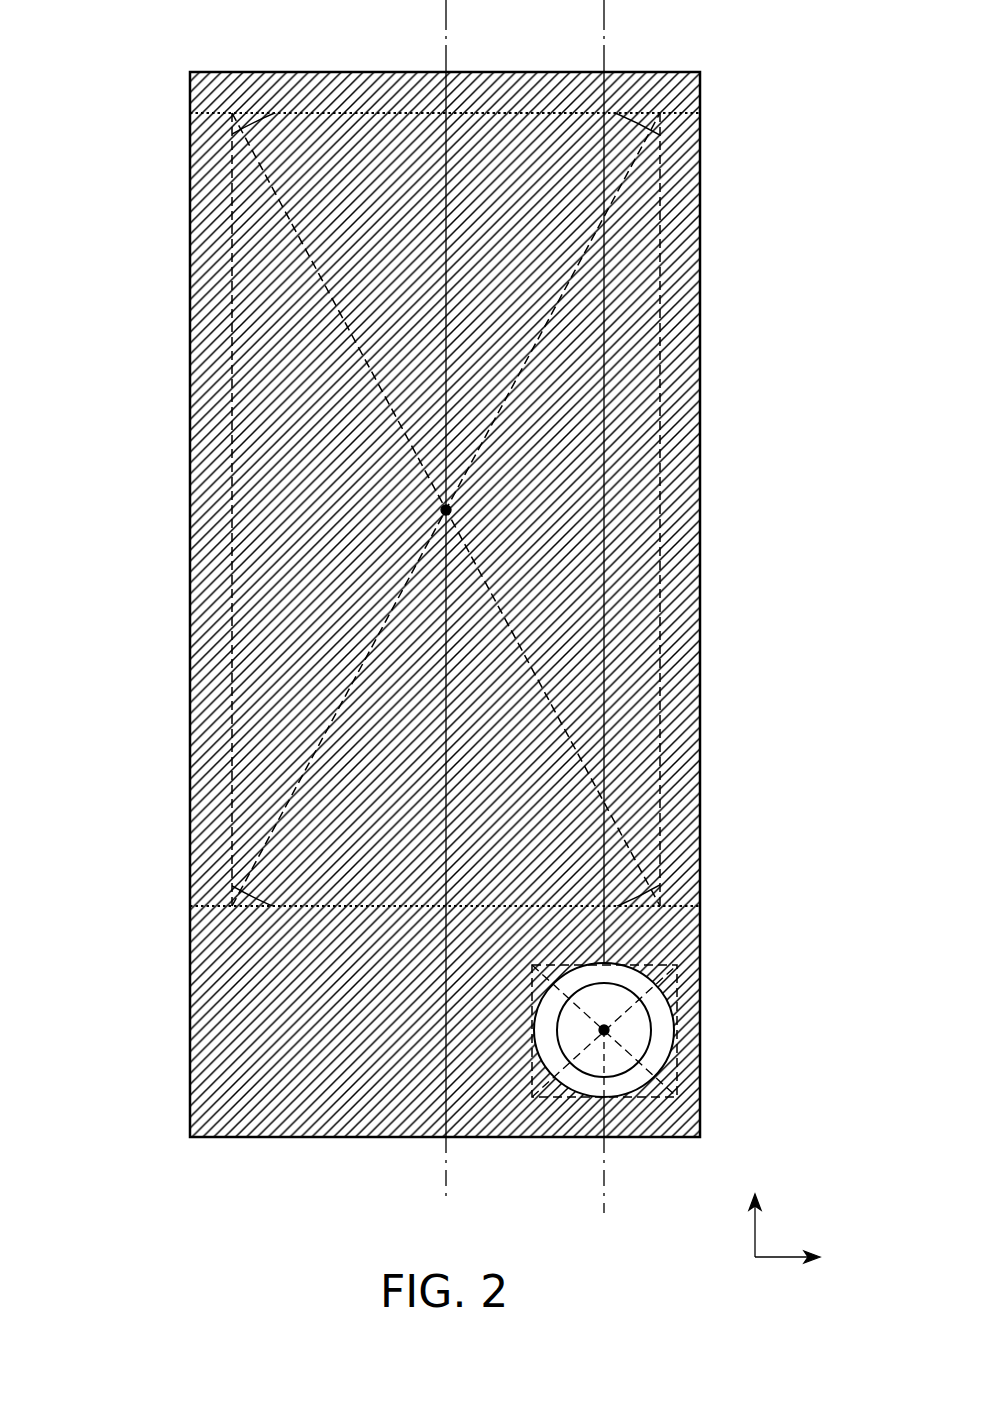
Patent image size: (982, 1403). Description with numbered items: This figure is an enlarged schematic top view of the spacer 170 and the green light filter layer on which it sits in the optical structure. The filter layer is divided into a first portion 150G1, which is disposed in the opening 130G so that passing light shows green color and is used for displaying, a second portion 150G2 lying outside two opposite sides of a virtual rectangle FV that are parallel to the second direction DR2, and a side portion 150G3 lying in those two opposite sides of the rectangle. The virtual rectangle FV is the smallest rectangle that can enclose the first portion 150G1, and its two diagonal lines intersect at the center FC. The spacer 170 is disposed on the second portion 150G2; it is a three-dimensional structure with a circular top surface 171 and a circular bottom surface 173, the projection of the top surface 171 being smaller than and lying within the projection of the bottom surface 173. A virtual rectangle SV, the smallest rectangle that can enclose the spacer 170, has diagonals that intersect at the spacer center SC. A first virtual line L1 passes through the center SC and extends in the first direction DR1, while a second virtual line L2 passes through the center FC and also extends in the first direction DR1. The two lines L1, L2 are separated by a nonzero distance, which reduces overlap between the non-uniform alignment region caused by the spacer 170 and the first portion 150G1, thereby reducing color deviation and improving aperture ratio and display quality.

The opening 130G is at (672, 658).
The side portion 150G3 is at (206, 297).
The second portion 150G2 is at (258, 1062).
The first portion 150G1 is at (627, 513).
The virtual rectangle FV is at (660, 876).
The center FC is at (442, 510).
The first virtual line L1 is at (605, 623).
The second virtual line L2 is at (445, 616).
The spacer 170 is at (662, 984).
The bottom surface 173 is at (665, 1025).
The top surface 171 is at (618, 1049).
The virtual rectangle SV is at (672, 992).
The center SC is at (599, 1037).
The first direction DR1 is at (756, 1213).
The second direction DR2 is at (816, 1258).